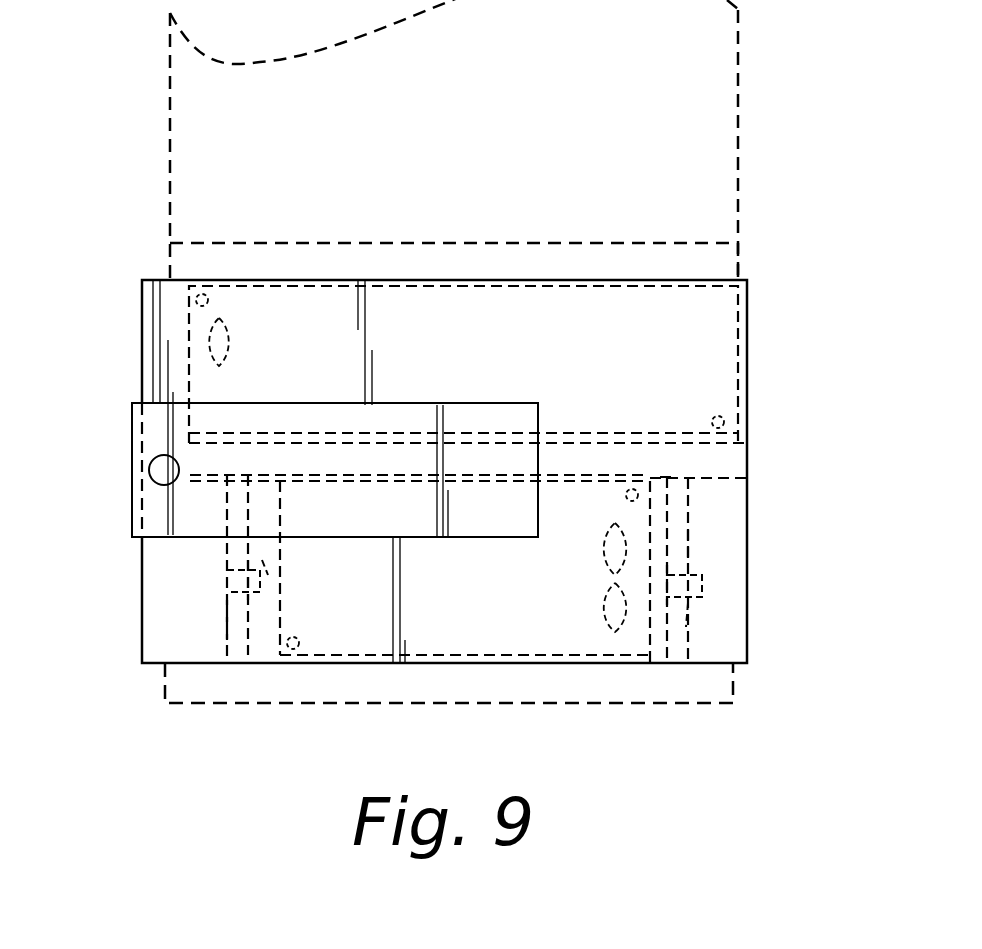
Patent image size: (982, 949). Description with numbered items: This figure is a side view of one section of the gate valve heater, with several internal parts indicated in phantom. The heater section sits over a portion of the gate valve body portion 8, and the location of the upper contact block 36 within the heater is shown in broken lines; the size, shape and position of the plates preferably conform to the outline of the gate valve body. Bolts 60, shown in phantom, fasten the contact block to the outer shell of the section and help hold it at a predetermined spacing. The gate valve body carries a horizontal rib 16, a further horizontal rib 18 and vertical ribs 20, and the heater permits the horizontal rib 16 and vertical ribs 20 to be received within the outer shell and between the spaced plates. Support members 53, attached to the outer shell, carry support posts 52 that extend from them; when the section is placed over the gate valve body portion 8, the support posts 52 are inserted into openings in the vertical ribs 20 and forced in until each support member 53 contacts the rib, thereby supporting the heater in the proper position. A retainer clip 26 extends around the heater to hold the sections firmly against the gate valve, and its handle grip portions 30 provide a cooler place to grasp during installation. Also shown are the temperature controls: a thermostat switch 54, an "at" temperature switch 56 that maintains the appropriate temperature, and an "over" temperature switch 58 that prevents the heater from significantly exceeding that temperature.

The body portion 8 is at (708, 102).
The horizontal rib 16 is at (708, 258).
The horizontal rib 18 is at (567, 680).
The vertical ribs 20 is at (228, 622).
The retainer clip 26 is at (185, 500).
The handle grip portions 30 is at (150, 466).
The upper contact block 36 is at (712, 312).
The support posts 52 is at (227, 580).
The support member 53 is at (262, 562).
The thermostat switch 54 is at (603, 550).
The "at" temperature switch 56 is at (228, 335).
The "over" temperature switch 58 is at (603, 603).
The bolt 60 is at (196, 303).